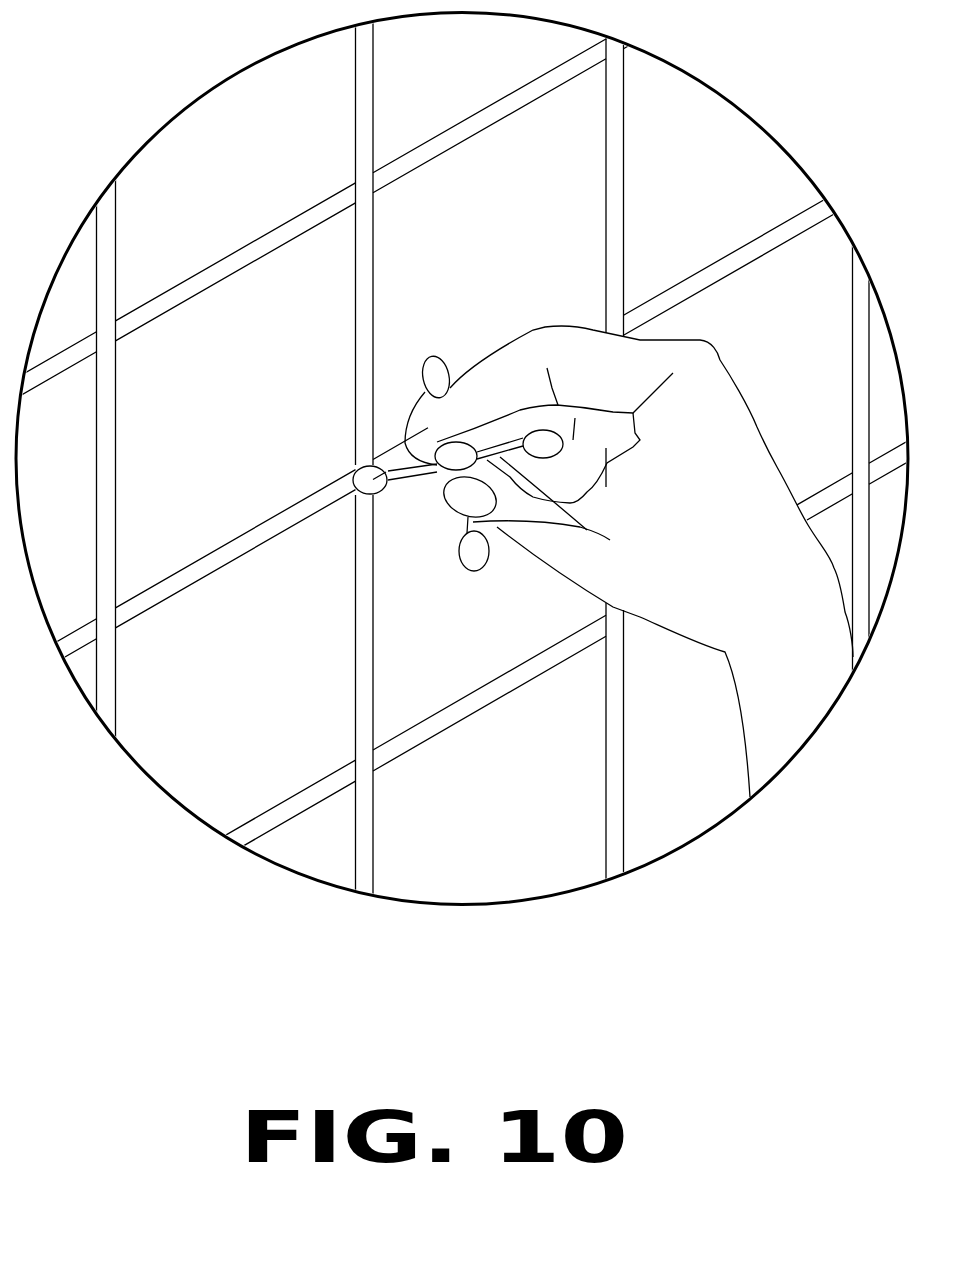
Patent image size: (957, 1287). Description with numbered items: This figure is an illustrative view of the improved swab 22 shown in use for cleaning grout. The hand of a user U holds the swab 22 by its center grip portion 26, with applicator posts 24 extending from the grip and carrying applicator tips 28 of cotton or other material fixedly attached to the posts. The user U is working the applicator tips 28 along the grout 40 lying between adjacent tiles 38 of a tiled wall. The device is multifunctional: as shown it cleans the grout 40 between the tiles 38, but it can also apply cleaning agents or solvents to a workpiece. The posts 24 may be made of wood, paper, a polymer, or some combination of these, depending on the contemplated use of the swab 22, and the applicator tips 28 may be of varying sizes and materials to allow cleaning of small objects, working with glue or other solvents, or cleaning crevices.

The improved swab 22 is at (460, 458).
The applicator posts 24 is at (508, 457).
The center grip portion 26 is at (458, 457).
The applicator tips 28 is at (475, 550).
The tiles 38 is at (258, 488).
The grout 40 is at (365, 632).
The user U is at (727, 465).